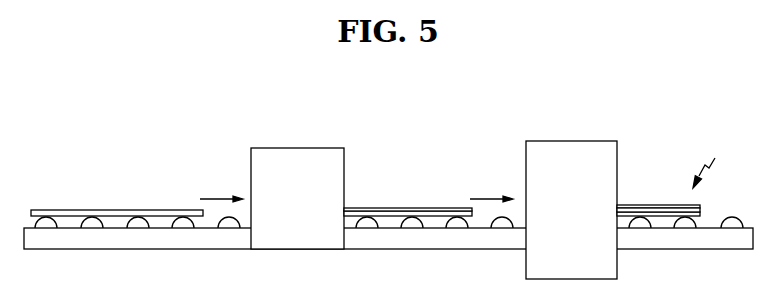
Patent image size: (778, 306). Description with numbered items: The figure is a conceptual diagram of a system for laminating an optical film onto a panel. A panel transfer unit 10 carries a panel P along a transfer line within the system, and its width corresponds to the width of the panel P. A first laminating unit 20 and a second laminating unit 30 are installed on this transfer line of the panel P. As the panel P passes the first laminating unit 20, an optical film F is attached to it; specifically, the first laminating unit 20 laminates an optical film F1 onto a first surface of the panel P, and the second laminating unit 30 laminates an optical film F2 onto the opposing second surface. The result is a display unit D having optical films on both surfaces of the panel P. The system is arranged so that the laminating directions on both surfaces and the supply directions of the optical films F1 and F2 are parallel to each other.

The panel transfer unit 10 is at (101, 250).
The first laminating unit 20 is at (318, 147).
The second laminating unit 30 is at (595, 140).
The panel P is at (100, 209).
The optical film F is at (419, 207).
The optical film for first surface F1 is at (655, 204).
The optical film for second surface F2 is at (663, 213).
The display unit D is at (711, 162).